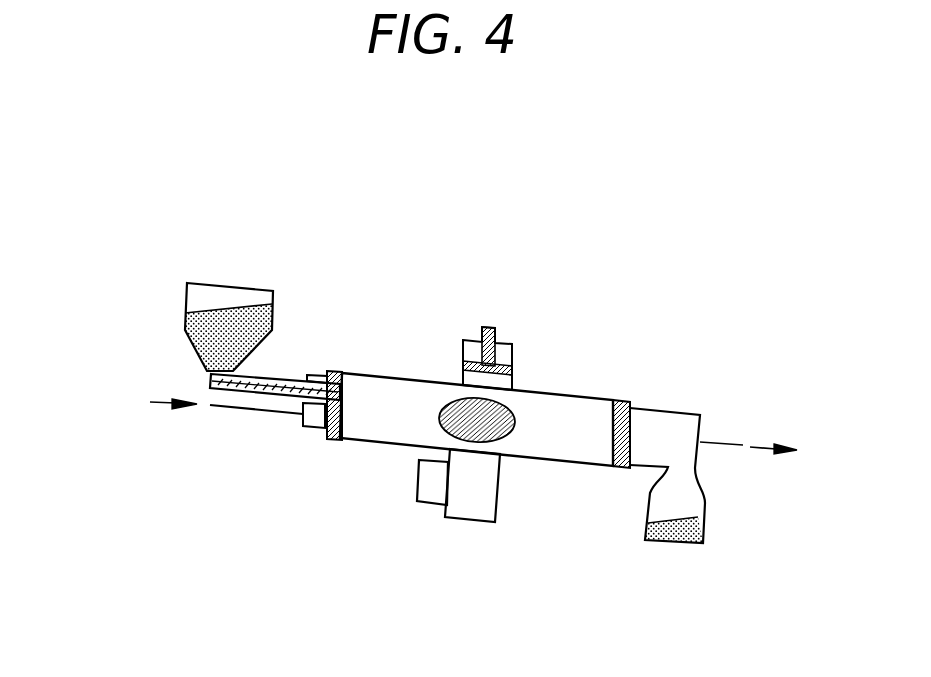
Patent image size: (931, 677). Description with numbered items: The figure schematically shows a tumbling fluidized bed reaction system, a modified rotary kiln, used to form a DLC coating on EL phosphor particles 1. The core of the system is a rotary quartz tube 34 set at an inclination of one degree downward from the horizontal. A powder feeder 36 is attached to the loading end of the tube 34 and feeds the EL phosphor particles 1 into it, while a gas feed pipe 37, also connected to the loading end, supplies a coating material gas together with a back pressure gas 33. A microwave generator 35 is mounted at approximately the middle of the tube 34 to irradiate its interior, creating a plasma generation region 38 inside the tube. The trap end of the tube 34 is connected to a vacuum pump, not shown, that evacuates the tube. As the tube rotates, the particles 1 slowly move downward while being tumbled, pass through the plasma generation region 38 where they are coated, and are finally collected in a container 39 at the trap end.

The EL phosphor particles 1 is at (225, 310).
The back pressure gas 33 is at (154, 403).
The rotary quartz tube 34 is at (365, 445).
The microwave generator 35 is at (435, 493).
The powder feeder 36 is at (288, 377).
The gas feed pipe 37 is at (252, 413).
The plasma generation region 38 is at (457, 408).
The container 39 is at (675, 543).